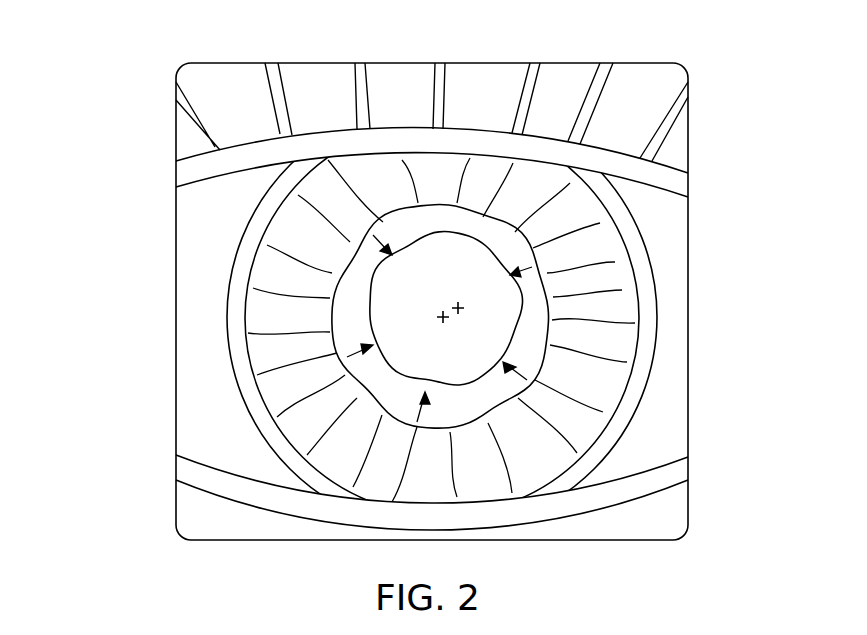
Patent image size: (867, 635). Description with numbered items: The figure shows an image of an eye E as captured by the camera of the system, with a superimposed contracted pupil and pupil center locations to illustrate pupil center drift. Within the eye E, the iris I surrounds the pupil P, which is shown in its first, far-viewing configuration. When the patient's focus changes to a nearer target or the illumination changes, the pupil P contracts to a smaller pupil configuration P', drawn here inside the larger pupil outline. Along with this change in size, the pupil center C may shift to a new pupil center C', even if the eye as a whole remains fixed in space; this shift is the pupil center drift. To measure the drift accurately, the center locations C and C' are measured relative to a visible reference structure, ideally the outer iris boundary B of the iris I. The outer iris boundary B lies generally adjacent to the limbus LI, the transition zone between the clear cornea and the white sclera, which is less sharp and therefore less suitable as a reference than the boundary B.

The eye E is at (122, 213).
The limbus LI is at (249, 248).
The iris I is at (279, 391).
The pupil P is at (534, 317).
The outer iris boundary B is at (628, 360).
The pupil center C is at (417, 319).
The new pupil center C' is at (435, 288).
The contracted pupil P' is at (439, 327).